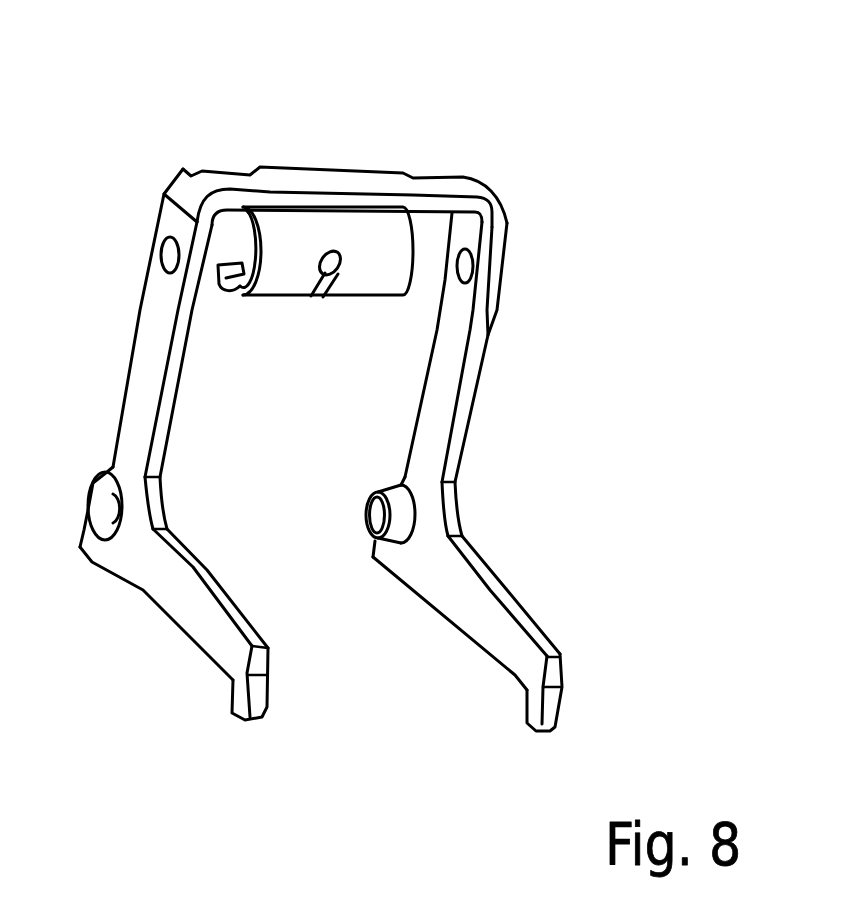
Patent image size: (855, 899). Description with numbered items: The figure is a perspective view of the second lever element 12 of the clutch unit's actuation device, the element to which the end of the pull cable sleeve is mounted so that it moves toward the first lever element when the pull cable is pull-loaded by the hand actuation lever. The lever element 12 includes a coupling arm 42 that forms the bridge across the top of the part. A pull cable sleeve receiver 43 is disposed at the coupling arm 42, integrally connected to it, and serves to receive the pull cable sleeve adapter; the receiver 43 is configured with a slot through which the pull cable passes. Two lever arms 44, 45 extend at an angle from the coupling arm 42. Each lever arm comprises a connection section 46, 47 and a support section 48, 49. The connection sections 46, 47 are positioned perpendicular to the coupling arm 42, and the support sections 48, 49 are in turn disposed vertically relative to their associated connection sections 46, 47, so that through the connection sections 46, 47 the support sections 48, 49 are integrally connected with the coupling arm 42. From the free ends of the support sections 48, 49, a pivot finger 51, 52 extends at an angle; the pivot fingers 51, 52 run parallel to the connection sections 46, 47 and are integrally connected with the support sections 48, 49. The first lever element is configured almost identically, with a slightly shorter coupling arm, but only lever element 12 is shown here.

The second lever element 12 is at (465, 151).
The coupling arm 42 is at (303, 180).
The pull cable sleeve receiver 43 is at (410, 253).
The lever arm 44 is at (133, 557).
The lever arm 45 is at (477, 548).
The connection section 46 is at (155, 342).
The connection section 47 is at (450, 358).
The support section 48 is at (183, 600).
The support section 49 is at (487, 610).
The pivot finger 51 is at (257, 703).
The pivot finger 52 is at (548, 720).